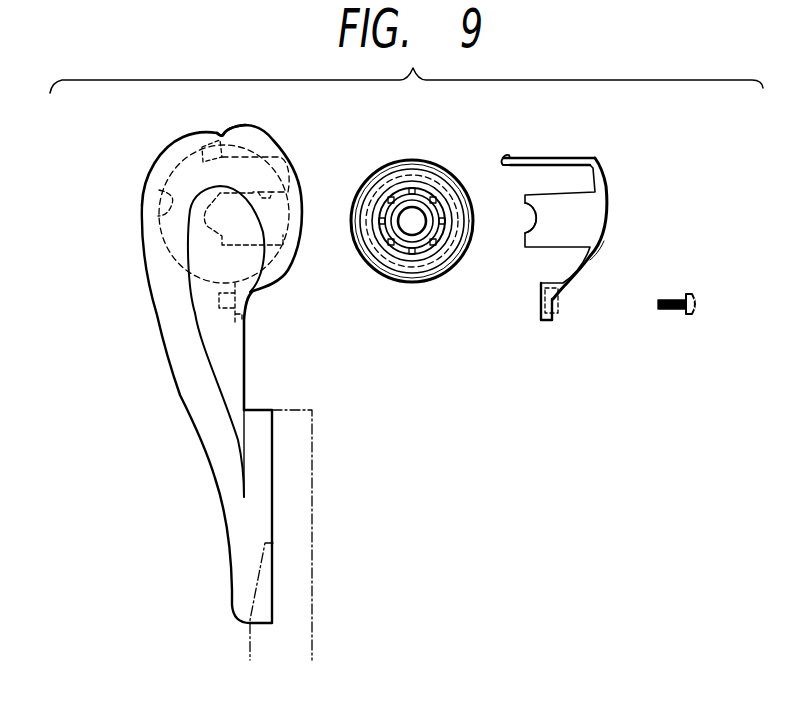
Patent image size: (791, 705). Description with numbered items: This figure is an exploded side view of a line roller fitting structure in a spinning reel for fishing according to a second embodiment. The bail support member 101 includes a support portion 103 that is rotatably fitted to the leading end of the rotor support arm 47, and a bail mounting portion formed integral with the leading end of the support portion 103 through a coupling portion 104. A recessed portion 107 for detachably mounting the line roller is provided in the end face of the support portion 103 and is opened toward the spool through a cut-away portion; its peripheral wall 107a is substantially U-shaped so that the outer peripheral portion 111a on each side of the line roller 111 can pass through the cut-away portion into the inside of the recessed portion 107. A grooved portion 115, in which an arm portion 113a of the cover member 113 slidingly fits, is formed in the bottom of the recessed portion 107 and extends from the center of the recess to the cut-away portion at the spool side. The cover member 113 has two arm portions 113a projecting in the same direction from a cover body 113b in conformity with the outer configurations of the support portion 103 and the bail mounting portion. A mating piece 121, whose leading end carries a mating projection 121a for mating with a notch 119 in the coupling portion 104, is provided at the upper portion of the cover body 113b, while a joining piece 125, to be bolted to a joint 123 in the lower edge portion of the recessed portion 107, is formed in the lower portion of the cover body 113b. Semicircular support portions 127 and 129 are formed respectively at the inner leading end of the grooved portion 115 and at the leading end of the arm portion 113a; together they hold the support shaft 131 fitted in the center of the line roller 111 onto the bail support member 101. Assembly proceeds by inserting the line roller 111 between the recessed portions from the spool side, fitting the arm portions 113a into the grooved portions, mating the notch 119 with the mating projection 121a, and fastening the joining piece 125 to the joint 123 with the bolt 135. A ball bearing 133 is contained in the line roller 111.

The rotor support arm 47 is at (307, 510).
The bail support member 101 is at (178, 380).
The support portion 103 is at (203, 413).
The coupling portion 104 is at (222, 134).
The recessed portion 107 is at (186, 166).
The peripheral wall 107a is at (152, 207).
The line roller 111 is at (411, 283).
The outer peripheral portion 111a is at (412, 161).
The cover member 113 is at (600, 170).
The arm portion 113a is at (572, 236).
The cover body 113b is at (600, 258).
The grooved portion 115 is at (286, 170).
The notch 119 is at (212, 141).
The mating piece 121 is at (551, 157).
The mating projection 121a is at (506, 156).
The joint 123 is at (247, 315).
The joining piece 125 is at (553, 315).
The semicircular support portion 127 is at (203, 233).
The semicircular support portion 129 is at (524, 222).
The support shaft 131 is at (412, 226).
The ball bearing 133 is at (408, 190).
The bolt 135 is at (694, 313).